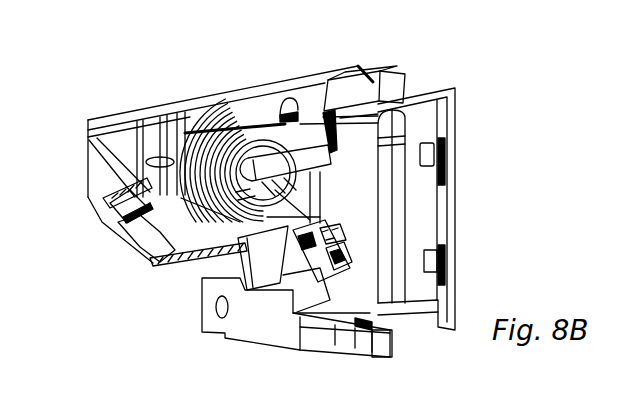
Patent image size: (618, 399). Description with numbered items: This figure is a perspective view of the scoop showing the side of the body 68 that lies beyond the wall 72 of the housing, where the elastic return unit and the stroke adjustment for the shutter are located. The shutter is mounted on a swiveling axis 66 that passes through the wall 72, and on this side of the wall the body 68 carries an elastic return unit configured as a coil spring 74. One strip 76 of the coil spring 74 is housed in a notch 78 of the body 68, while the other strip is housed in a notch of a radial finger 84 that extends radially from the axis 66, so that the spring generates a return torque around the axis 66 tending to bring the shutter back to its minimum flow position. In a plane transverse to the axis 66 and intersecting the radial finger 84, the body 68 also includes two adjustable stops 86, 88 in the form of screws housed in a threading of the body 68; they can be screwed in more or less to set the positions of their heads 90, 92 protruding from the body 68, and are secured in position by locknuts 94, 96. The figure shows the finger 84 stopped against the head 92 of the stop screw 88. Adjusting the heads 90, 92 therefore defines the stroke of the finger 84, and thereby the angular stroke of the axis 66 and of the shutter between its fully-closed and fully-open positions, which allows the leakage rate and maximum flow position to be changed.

The swiveling axis 66 is at (320, 204).
The body 68 is at (360, 66).
The wall 72 is at (190, 112).
The coil spring 74 is at (178, 272).
The strip 76 is at (330, 133).
The notch 78 is at (338, 141).
The radial finger 84 is at (270, 270).
The adjustable stop 86 is at (105, 222).
The adjustable stop 88 is at (350, 263).
The head 90 is at (138, 250).
The head 92 is at (300, 270).
The locknut 94 is at (118, 193).
The locknut 96 is at (330, 237).